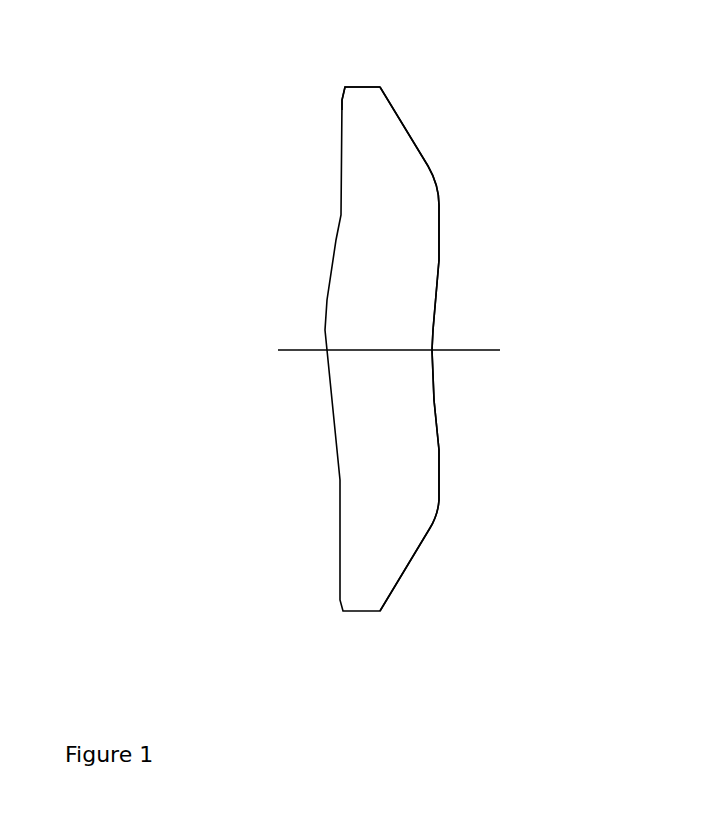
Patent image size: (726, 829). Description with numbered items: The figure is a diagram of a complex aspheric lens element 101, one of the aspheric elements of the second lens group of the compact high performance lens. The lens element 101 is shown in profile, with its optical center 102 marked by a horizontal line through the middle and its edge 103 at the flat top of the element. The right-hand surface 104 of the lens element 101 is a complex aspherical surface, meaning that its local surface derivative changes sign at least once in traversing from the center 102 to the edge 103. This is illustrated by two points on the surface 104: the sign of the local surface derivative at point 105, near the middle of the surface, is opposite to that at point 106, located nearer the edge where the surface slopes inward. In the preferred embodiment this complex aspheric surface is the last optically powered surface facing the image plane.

The lens element 101 is at (387, 684).
The center 102 is at (302, 345).
The edge 103 is at (343, 93).
The surface 104 is at (443, 443).
The point 105 is at (440, 265).
The point 106 is at (430, 165).